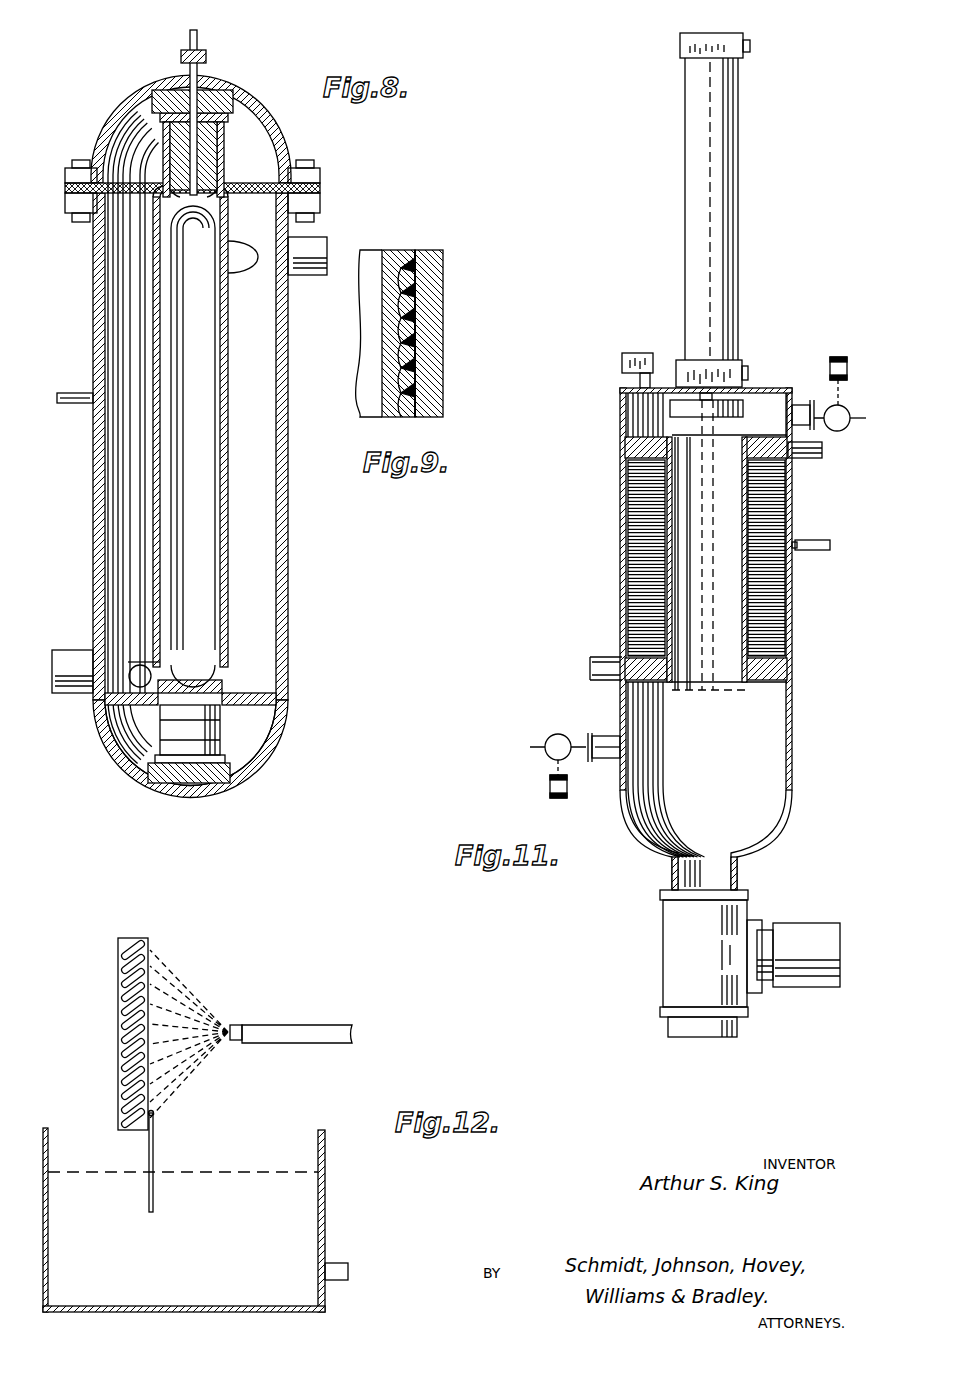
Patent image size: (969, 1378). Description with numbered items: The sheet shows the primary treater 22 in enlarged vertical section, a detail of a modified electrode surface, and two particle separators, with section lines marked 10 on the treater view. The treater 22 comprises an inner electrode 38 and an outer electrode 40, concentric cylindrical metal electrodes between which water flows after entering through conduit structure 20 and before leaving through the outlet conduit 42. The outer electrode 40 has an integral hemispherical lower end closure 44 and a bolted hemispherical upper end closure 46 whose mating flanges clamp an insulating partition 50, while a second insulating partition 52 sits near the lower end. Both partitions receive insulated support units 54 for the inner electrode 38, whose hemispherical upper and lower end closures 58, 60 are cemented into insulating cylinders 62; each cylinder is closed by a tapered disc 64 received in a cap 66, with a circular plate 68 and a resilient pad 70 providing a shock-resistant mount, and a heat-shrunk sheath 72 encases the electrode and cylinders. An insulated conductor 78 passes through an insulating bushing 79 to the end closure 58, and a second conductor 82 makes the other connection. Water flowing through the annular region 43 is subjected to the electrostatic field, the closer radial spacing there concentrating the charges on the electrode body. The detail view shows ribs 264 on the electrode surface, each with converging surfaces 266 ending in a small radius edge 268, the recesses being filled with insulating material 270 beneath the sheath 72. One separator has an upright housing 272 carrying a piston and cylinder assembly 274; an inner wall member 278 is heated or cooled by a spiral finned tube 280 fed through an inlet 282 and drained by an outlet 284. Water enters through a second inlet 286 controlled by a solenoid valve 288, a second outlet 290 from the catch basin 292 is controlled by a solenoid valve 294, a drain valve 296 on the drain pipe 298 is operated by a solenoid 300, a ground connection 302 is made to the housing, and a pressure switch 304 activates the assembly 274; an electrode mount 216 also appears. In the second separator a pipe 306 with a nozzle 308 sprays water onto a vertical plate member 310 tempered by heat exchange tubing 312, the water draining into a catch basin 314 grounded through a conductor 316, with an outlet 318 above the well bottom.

In FIG. 8, the section line for FIG. 10 is at (90, 257).
In FIG. 8, the conduit structure 20 is at (306, 280).
In FIG. 8, the primary treater 22 is at (136, 56).
In FIG. 8, the inner electrode 38 is at (230, 536).
In FIG. 8, the outer electrode 40 is at (290, 618).
In FIG. 8, the outlet conduit 42 is at (62, 650).
In FIG. 8, the annular region 43 is at (255, 443).
In FIG. 8, the lower end closure 44 is at (262, 768).
In FIG. 8, the upper end closure 46 is at (254, 104).
In FIG. 8, the insulating partition 50 is at (272, 178).
In FIG. 8, the second insulating partition 52 is at (262, 700).
In FIG. 8, the insulated support unit 54 is at (218, 142).
In FIG. 8, the upper hemispherical end closure 58 is at (205, 214).
In FIG. 8, the lower hemispherical end closure 60 is at (196, 674).
In FIG. 8, the cylinder of insulating material 62 is at (158, 160).
In FIG. 8, the disc 64 is at (213, 179).
In FIG. 8, the cap 66 is at (132, 120).
In FIG. 8, the circular plate 68 is at (224, 128).
In FIG. 8, the resilient pad 70 is at (195, 92).
In FIG. 8, the sheath 72 is at (228, 376).
In FIG. 9, the sheath 72 is at (445, 372).
In FIG. 8, the insulated conductor 78 is at (191, 40).
In FIG. 8, the insulating bushing 79 is at (182, 62).
In FIG. 8, the second conductor 82 is at (74, 392).
In FIG. 11, the electrode mount 216 is at (707, 541).
In FIG. 9, the ribs 264 is at (416, 252).
In FIG. 9, the converging surfaces 266 is at (420, 284).
In FIG. 9, the small radius edge 268 is at (432, 336).
In FIG. 9, the insulating material 270 is at (401, 416).
In FIG. 11, the housing 272 is at (620, 563).
In FIG. 11, the piston and cylinder assembly 274 is at (740, 132).
In FIG. 11, the inner wall member 278 is at (735, 640).
In FIG. 11, the finned tube 280 is at (770, 672).
In FIG. 11, the inlet 282 is at (842, 449).
In FIG. 11, the outlet 284 is at (600, 657).
In FIG. 11, the second inlet 286 is at (806, 402).
In FIG. 11, the solenoid valve 288 is at (845, 406).
In FIG. 11, the second outlet 290 is at (606, 764).
In FIG. 11, the catch basin 292 is at (793, 798).
In FIG. 11, the solenoid valve 294 is at (546, 756).
In FIG. 11, the drain valve 296 is at (663, 958).
In FIG. 11, the drain pipe 298 is at (740, 868).
In FIG. 11, the solenoid 300 is at (812, 990).
In FIG. 11, the ground connection 302 is at (806, 552).
In FIG. 11, the pressure switch 304 is at (641, 352).
In FIG. 12, the pipe 306 is at (400, 1035).
In FIG. 12, the nozzle 308 is at (236, 1024).
In FIG. 12, the plate member 310 is at (152, 958).
In FIG. 12, the heat exchange tubing 312 is at (128, 947).
In FIG. 12, the catch basin 314 is at (326, 1178).
In FIG. 12, the conductor 316 is at (154, 1160).
In FIG. 12, the outlet 318 is at (390, 1271).